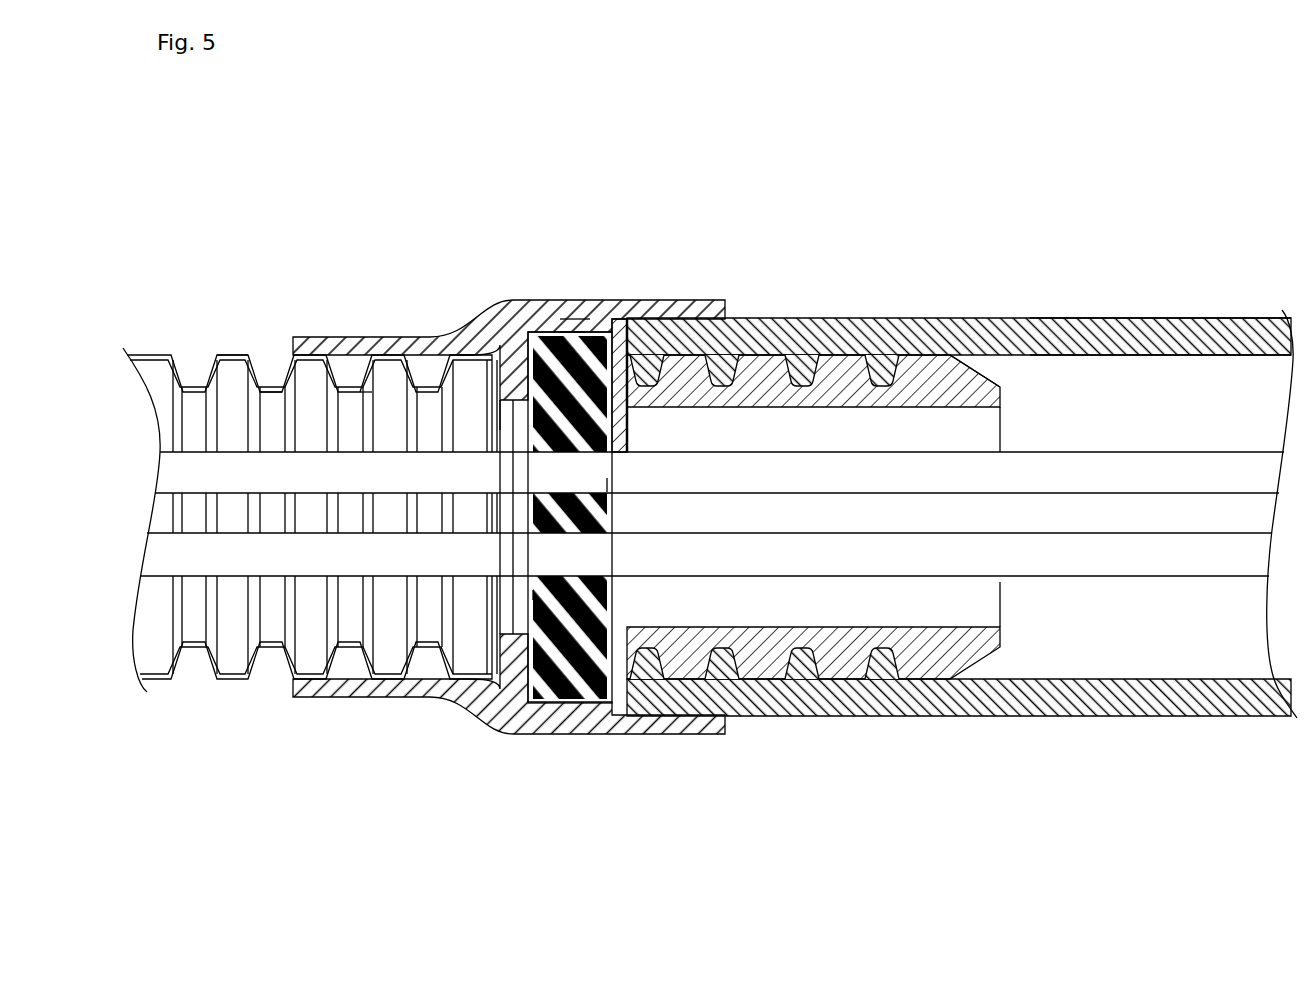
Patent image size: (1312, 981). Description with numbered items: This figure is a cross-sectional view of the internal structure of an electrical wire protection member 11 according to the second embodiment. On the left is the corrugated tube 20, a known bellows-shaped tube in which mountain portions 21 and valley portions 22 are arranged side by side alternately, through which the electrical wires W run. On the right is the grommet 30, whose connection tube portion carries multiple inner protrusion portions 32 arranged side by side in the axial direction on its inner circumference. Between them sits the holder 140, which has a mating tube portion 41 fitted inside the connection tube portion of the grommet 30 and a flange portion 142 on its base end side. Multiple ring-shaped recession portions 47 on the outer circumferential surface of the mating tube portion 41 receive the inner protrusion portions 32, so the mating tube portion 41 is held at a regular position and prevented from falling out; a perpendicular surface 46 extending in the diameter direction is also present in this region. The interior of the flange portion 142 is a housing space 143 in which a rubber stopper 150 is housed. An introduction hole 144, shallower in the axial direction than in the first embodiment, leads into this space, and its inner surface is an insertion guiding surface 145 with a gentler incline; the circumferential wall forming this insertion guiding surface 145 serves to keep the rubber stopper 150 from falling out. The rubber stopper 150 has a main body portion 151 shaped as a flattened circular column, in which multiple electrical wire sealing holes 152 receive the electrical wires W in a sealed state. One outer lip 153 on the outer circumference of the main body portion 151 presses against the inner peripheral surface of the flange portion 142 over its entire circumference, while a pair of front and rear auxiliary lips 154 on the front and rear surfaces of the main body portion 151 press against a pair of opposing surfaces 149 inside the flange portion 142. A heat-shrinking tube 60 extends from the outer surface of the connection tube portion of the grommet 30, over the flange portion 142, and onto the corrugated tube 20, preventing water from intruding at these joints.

The electrical wire protection member 11 is at (852, 441).
The corrugated tube 20 is at (188, 342).
The mountain portion 21 is at (248, 352).
The valley portion 22 is at (272, 385).
The grommet 30 is at (1037, 300).
The inner protrusion portion 32 is at (830, 350).
The mating tube portion 41 is at (1000, 395).
The perpendicular surface 46 is at (737, 380).
The ring-shaped recession portion 47 is at (802, 385).
The heat-shrinking tube 60 is at (400, 336).
The holder 140 is at (1017, 380).
The flange portion 142 is at (573, 330).
The housing space 143 is at (613, 345).
The introduction hole 144 is at (366, 388).
The insertion guiding surface 145 is at (467, 355).
The opposing surface 149 is at (435, 387).
The rubber stopper 150 is at (618, 508).
The main body portion 151 is at (575, 596).
The electrical wire sealing hole 152 is at (574, 490).
The outer lip 153 is at (572, 340).
The auxiliary lip 154 is at (505, 420).
The electrical wire W is at (1210, 463).